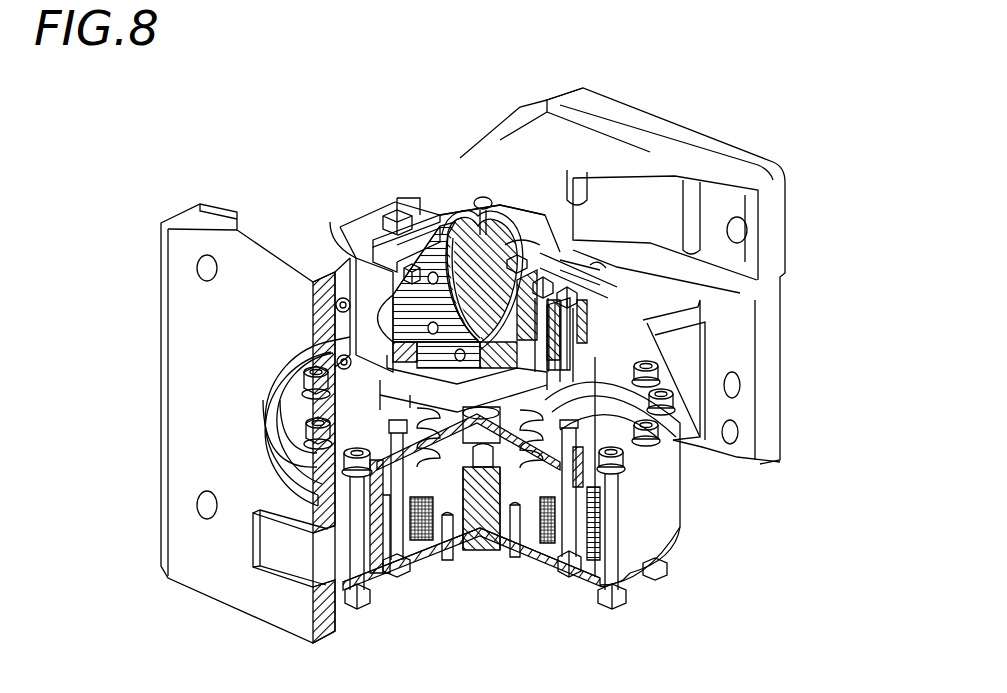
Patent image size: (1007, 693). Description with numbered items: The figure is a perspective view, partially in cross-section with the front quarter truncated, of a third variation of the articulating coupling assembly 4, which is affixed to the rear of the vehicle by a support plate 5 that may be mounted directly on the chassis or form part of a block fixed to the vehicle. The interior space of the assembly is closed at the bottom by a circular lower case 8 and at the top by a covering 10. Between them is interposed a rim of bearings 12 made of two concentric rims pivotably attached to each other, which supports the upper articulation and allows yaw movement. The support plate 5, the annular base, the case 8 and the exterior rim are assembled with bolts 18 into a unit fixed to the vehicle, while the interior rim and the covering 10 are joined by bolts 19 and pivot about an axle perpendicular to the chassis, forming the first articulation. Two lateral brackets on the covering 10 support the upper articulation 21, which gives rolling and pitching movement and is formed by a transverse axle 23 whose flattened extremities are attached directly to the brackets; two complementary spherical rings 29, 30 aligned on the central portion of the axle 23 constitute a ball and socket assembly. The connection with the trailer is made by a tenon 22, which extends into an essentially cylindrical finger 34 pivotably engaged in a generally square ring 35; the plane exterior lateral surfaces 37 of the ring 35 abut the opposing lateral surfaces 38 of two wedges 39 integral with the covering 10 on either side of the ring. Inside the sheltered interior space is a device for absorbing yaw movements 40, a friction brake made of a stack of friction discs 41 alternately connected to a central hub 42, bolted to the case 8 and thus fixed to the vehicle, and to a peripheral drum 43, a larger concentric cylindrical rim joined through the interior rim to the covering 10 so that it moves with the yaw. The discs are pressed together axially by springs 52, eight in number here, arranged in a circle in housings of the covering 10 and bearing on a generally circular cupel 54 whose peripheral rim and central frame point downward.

The articulating coupling assembly 4 is at (190, 120).
The support plate 5 is at (192, 556).
The lower support or case 8 is at (407, 582).
The covering 10 is at (342, 419).
The rim of bearings 12 is at (650, 483).
The bolts 18 is at (617, 517).
The bolts 19 is at (613, 598).
The upper articulation 21 is at (455, 150).
The tenon 22 is at (616, 75).
The transverse axle 23 is at (540, 262).
The spherical ring 29 is at (490, 287).
The spherical ring 30 is at (400, 315).
The cylindrical finger 34 is at (415, 264).
The ring 35 is at (385, 258).
The plane exterior lateral surfaces 37 is at (347, 240).
The opposing lateral surfaces 38 is at (360, 363).
The wedges 39 is at (340, 334).
The device for absorbing yaw movements 40 is at (540, 570).
The friction discs 41 is at (437, 555).
The central hub 42 is at (480, 545).
The peripheral drum 43 is at (380, 590).
The springs 52 is at (508, 432).
The cupel 54 is at (560, 383).